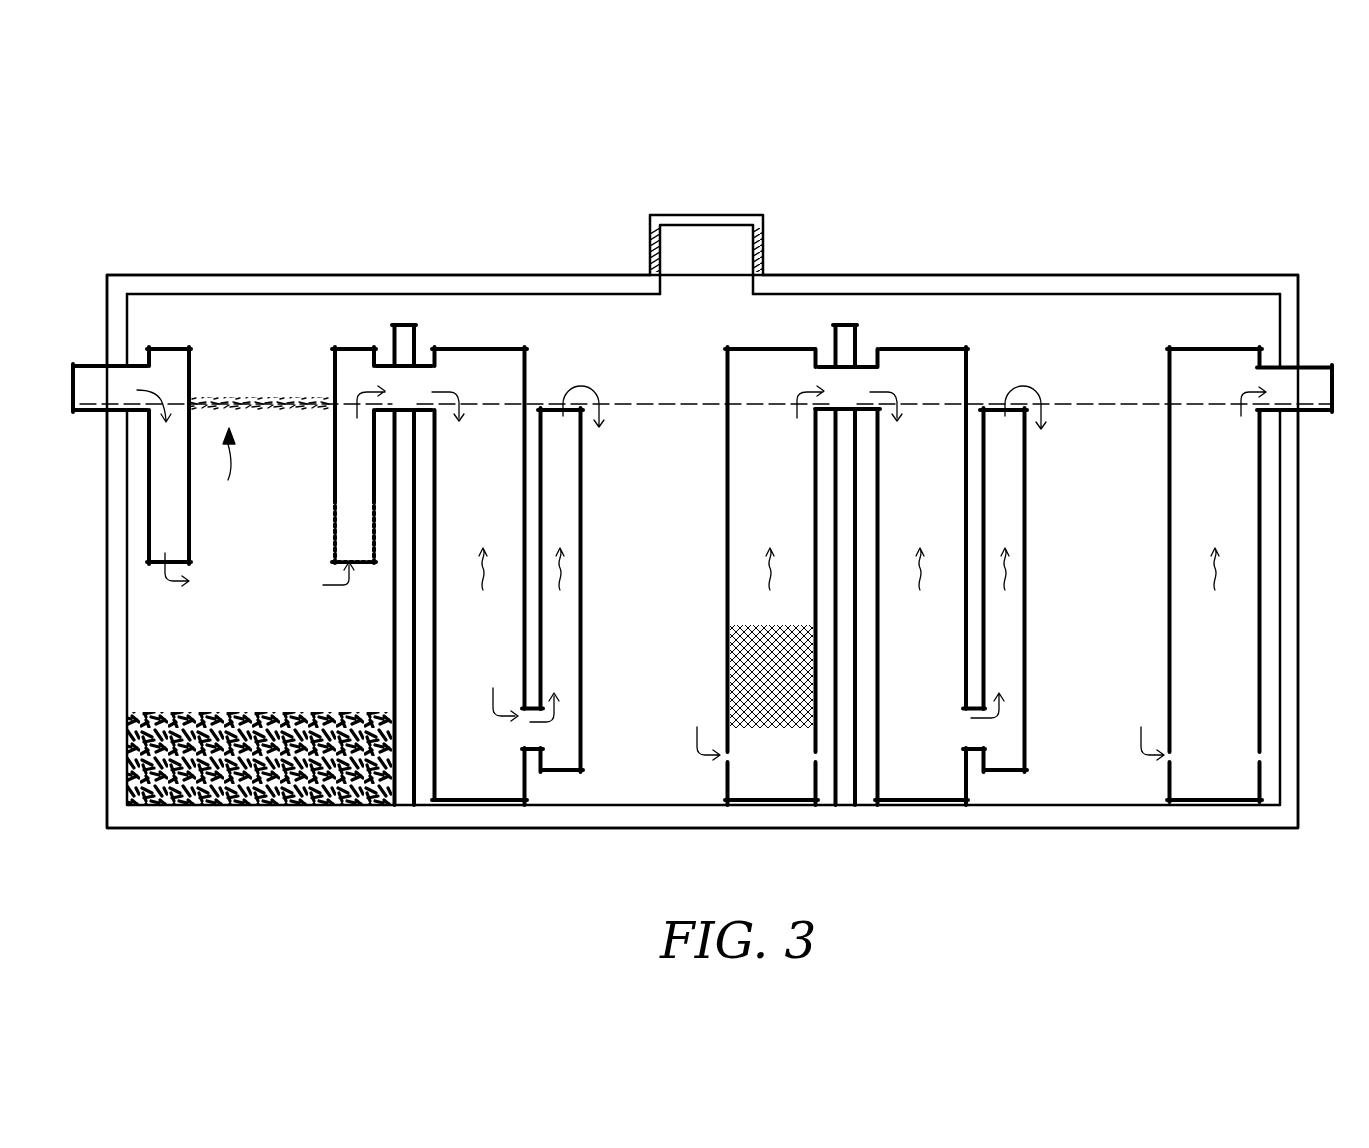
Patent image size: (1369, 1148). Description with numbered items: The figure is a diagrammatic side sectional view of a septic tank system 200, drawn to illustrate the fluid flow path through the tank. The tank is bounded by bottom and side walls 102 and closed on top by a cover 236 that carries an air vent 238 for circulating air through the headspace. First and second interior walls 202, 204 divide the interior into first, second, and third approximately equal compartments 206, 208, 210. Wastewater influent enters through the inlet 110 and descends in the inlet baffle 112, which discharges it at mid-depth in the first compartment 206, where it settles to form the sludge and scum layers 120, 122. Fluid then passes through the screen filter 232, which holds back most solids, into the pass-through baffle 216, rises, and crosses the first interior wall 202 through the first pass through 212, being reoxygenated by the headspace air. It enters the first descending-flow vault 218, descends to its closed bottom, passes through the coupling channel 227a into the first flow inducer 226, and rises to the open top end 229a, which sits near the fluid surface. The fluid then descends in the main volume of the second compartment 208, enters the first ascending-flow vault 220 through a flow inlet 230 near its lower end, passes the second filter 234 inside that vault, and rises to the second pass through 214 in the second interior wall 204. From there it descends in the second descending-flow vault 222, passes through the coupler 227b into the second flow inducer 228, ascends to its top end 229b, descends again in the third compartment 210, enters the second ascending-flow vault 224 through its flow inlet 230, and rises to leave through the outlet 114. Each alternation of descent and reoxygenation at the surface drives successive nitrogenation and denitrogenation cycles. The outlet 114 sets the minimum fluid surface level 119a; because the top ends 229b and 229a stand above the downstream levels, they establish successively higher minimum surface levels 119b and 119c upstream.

The septic tank system 200 is at (1214, 98).
The bottom and side walls 102 is at (128, 660).
The cover 236 is at (425, 275).
The air vent 238 is at (743, 214).
The first compartment 206 is at (123, 620).
The second compartment 208 is at (604, 803).
The third compartment 210 is at (1040, 803).
The inlet 110 is at (94, 412).
The outlet 114 is at (1325, 412).
The inlet baffle 112 is at (191, 546).
The minimum fluid surface level 119a is at (1100, 402).
The higher minimum fluid surface level 119b is at (650, 402).
The higher minimum fluid surface level 119c is at (270, 400).
The sludge layer 120 is at (158, 820).
The scum layer 122 is at (228, 469).
The first interior wall 202 is at (394, 618).
The second interior wall 204 is at (849, 775).
The first pass through 212 is at (418, 364).
The second pass through 214 is at (862, 364).
The pass-through baffle 216 is at (332, 432).
The first descending-flow vault 218 is at (528, 364).
The first ascending-flow vault 220 is at (725, 470).
The second descending-flow vault 222 is at (971, 364).
The second ascending-flow vault 224 is at (1167, 470).
The first flow inducer 226 is at (585, 520).
The coupling channel 227a is at (522, 746).
The coupler 227b is at (963, 746).
The second flow inducer 228 is at (1027, 565).
The top end of first flow inducer 229a is at (598, 378).
The top end of second flow inducer 229b is at (1040, 380).
The flow inlet 230 is at (812, 762).
The screen filter 232 is at (332, 548).
The second filter 234 is at (728, 655).